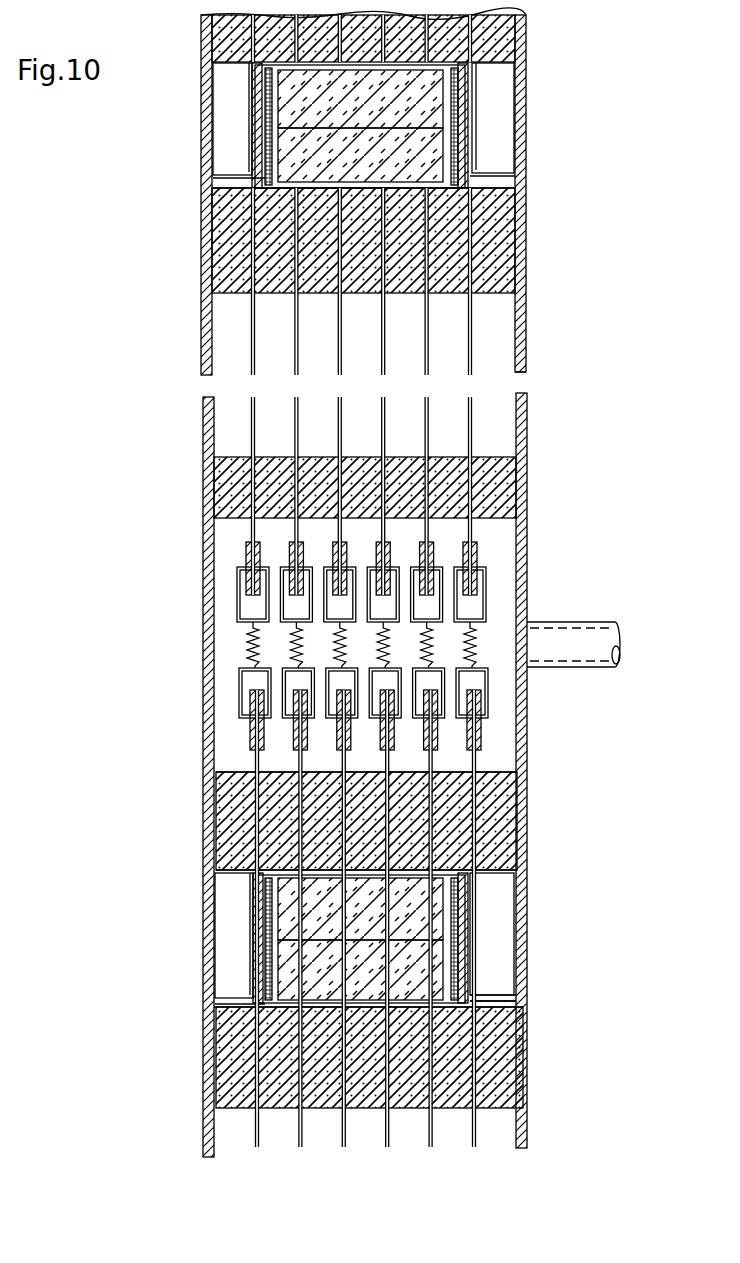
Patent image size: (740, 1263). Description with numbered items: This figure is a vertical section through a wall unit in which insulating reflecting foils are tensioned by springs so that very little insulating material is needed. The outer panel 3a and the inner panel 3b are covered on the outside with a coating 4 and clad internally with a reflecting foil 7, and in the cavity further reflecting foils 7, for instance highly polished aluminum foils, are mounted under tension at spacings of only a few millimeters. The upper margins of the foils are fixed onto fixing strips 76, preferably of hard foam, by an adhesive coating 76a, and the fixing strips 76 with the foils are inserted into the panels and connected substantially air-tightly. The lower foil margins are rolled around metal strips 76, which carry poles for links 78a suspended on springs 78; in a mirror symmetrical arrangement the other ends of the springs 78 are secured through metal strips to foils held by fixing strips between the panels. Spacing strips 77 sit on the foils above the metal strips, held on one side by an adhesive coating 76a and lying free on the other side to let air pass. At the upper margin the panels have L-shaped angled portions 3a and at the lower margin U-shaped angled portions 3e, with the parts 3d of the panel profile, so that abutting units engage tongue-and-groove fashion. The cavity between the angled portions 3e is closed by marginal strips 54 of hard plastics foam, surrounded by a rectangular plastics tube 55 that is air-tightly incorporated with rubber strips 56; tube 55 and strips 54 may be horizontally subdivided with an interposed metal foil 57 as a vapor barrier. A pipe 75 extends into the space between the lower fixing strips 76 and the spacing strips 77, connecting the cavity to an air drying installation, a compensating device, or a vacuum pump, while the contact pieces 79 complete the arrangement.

The outer panel 3a is at (212, 262).
The inner panel 3b is at (527, 325).
The housing section 3d is at (468, 968).
The U-shaped angled portions 3e is at (483, 978).
The coating 4 is at (527, 348).
The reflecting foil 7 is at (222, 318).
The marginal strips 54 is at (425, 101).
The rectangular tube 55 is at (460, 162).
The rubber strips 56 is at (270, 107).
The metal foil 57 is at (323, 127).
The pipe 75 is at (588, 640).
The fixing strips 76 is at (510, 45).
The adhesive coating 76a is at (262, 216).
The spacing strips 77 is at (505, 465).
The springs 78 is at (250, 645).
The links 78a is at (250, 685).
The contact piece 79 is at (470, 545).